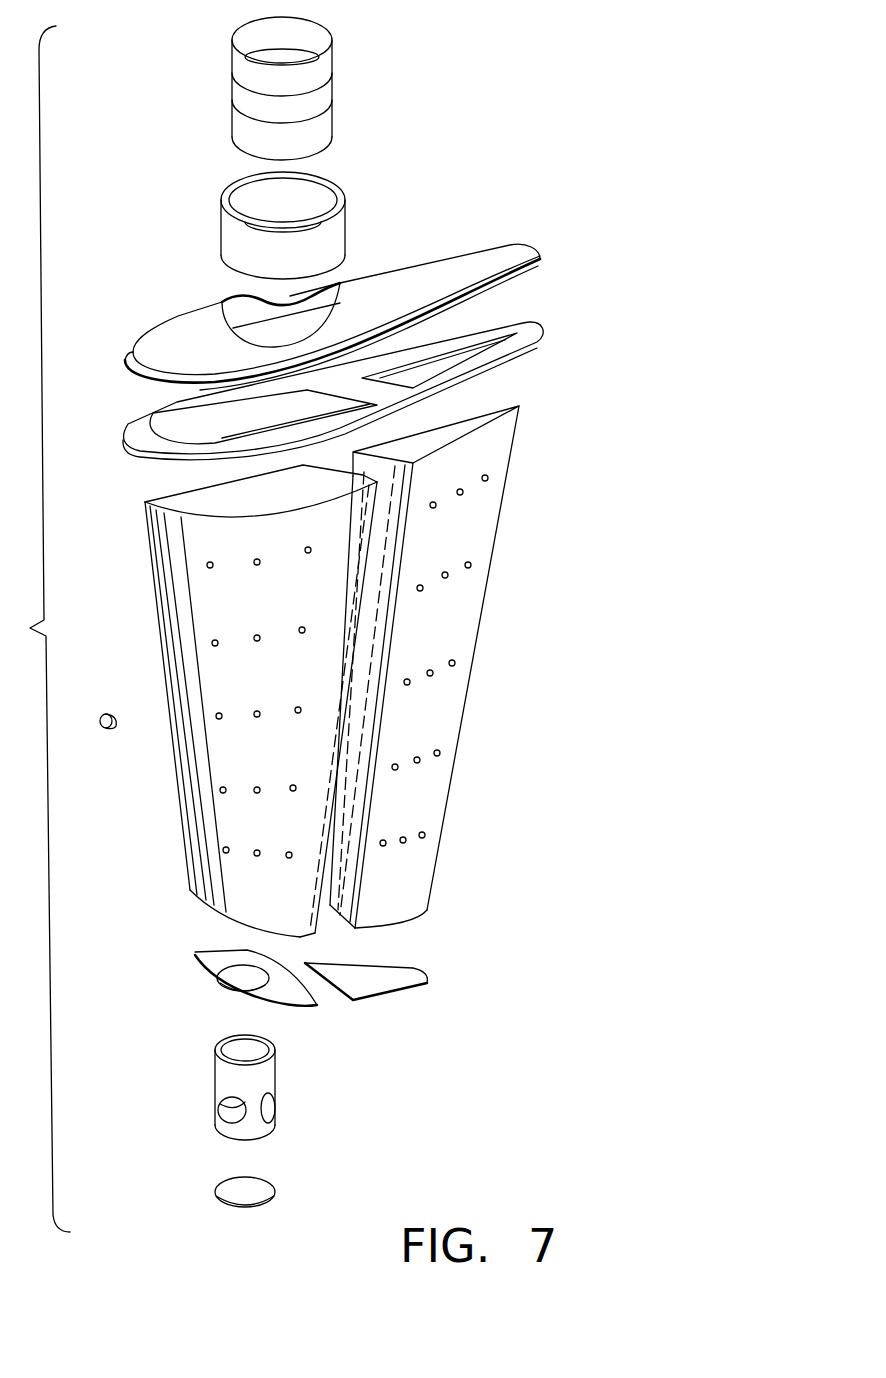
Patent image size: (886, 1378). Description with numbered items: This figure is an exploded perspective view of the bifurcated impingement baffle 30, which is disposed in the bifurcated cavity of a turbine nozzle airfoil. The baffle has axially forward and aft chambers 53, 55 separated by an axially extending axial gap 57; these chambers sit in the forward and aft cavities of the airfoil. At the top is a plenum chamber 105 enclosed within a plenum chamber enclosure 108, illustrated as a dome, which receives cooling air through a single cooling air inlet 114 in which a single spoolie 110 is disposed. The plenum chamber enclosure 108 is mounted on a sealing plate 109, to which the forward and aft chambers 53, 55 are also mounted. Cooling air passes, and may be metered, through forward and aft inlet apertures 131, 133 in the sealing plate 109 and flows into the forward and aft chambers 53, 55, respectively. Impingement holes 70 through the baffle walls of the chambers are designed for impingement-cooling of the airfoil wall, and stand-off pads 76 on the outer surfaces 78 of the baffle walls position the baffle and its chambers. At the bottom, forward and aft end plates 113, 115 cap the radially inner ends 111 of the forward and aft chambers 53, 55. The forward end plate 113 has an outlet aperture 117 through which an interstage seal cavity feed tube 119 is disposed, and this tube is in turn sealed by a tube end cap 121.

The bifurcated impingement baffle 30 is at (497, 1133).
The axially forward chamber 53 is at (198, 760).
The axially aft chamber 55 is at (439, 667).
The axial gap 57 is at (358, 805).
The impingement holes 70 is at (258, 636).
The stand-off pads 76 is at (115, 714).
The outer surfaces 78 is at (205, 545).
The plenum chamber 105 is at (233, 305).
The plenum chamber enclosure 108 is at (332, 302).
The sealing plate 109 is at (347, 368).
The spoolie 110 is at (334, 96).
The radially inner ends 111 is at (225, 918).
The forward end plate 113 is at (212, 976).
The cooling air inlet 114 is at (340, 283).
The aft end plate 115 is at (427, 980).
The outlet aperture 117 is at (248, 982).
The interstage seal cavity feed tube 119 is at (277, 1076).
The tube end cap 121 is at (268, 1186).
The forward inlet aperture 131 is at (185, 432).
The aft inlet aperture 133 is at (438, 365).